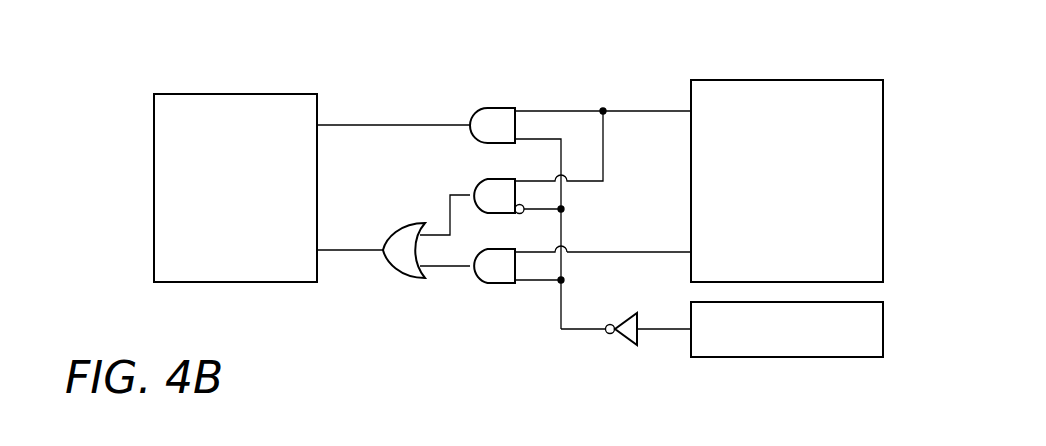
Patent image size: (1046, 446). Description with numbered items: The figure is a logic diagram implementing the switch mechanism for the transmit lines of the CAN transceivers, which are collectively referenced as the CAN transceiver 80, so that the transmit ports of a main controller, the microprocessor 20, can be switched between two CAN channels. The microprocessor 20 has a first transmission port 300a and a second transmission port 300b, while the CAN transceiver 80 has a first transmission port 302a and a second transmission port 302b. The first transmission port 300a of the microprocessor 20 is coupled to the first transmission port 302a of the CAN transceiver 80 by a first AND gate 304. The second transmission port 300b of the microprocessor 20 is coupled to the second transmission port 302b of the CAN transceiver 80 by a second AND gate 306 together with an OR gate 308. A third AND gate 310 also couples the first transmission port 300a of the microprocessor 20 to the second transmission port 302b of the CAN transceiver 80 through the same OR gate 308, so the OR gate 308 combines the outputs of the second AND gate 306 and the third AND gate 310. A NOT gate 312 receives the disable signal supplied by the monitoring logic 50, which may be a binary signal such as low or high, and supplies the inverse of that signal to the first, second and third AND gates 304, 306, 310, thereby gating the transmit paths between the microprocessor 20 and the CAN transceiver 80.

The microprocessor 20 is at (862, 80).
The monitoring logic 50 is at (868, 358).
The CAN transceiver 80 is at (154, 145).
The first transmission port 300a is at (722, 102).
The second transmission port 300b is at (708, 243).
The first transmission port 302a is at (282, 112).
The second transmission port 302b is at (288, 258).
The first AND gate 304 is at (500, 106).
The second AND gate 306 is at (495, 285).
The OR gate 308 is at (401, 222).
The third AND gate 310 is at (478, 178).
The NOT gate 312 is at (623, 338).